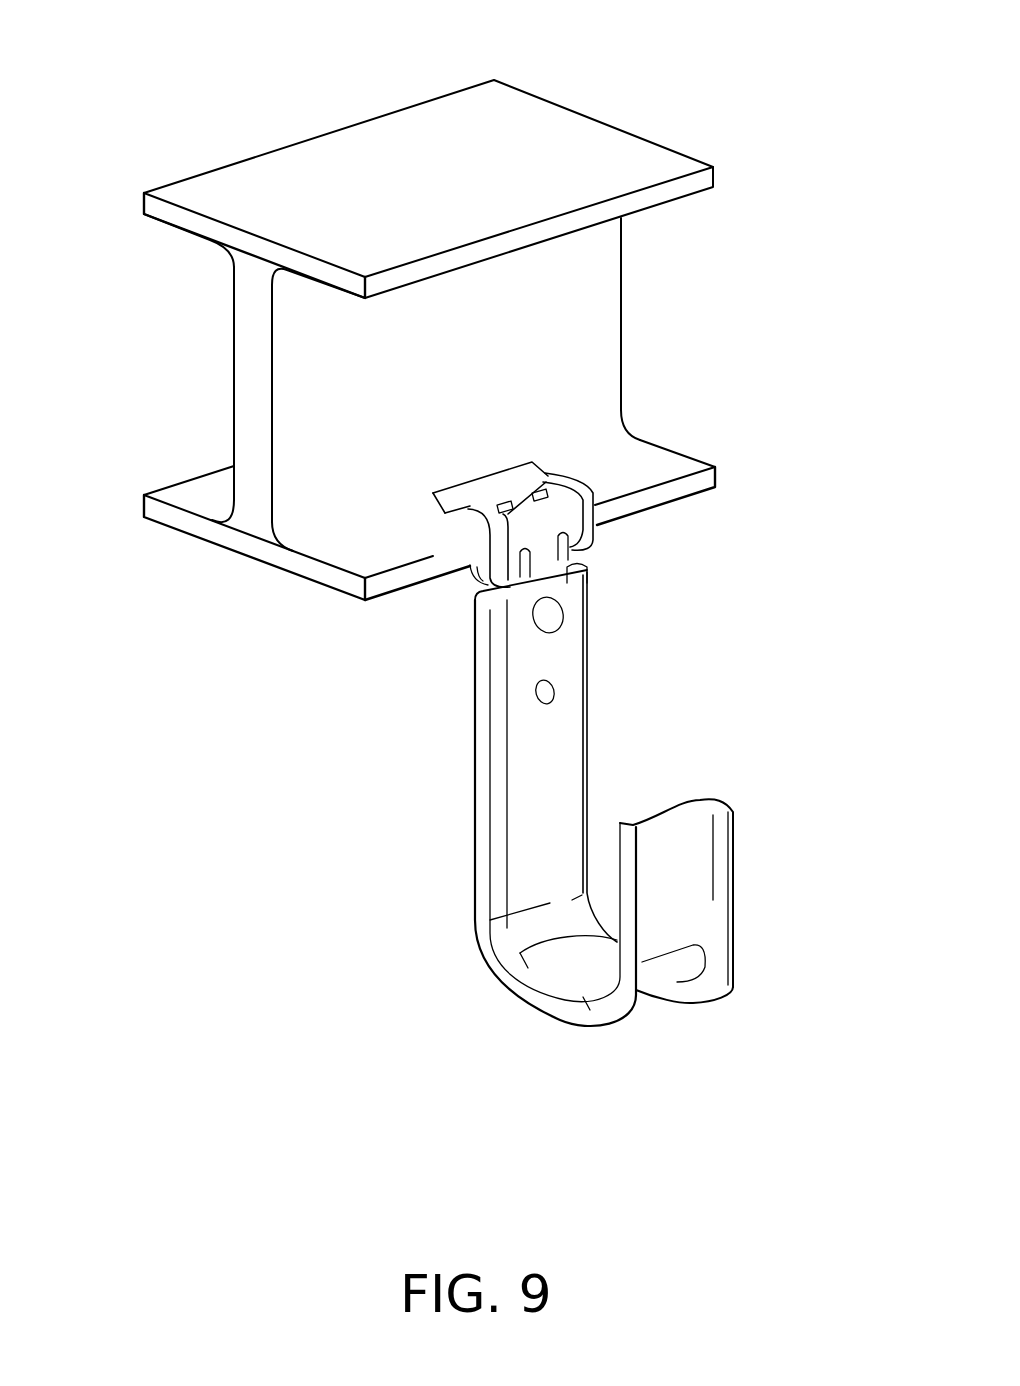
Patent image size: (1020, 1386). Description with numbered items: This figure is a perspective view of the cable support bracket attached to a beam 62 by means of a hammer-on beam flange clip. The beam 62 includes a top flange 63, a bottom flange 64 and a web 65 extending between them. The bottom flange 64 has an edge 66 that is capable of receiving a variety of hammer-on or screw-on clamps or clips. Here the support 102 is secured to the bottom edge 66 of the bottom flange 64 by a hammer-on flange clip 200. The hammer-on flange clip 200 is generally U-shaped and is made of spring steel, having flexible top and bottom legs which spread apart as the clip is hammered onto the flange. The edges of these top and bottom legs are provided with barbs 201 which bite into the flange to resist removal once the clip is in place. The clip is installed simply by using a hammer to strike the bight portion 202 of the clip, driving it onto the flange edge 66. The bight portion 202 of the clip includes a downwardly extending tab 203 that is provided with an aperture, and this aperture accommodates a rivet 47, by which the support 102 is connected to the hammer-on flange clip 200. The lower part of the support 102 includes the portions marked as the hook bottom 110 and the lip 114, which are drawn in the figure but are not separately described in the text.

The beam 62 is at (462, 353).
The top flange 63 is at (680, 160).
The bottom flange 64 is at (429, 558).
The web 65 is at (297, 390).
The edge 66 is at (417, 587).
The hammer-on flange clip 200 is at (556, 509).
The barbs 201 is at (441, 516).
The bight portion 202 is at (550, 535).
The downwardly extending tab 203 is at (597, 573).
The support 102 is at (598, 866).
The rivet 47 is at (548, 625).
The hook bottom 110 is at (521, 962).
The hook lip 114 is at (595, 1008).